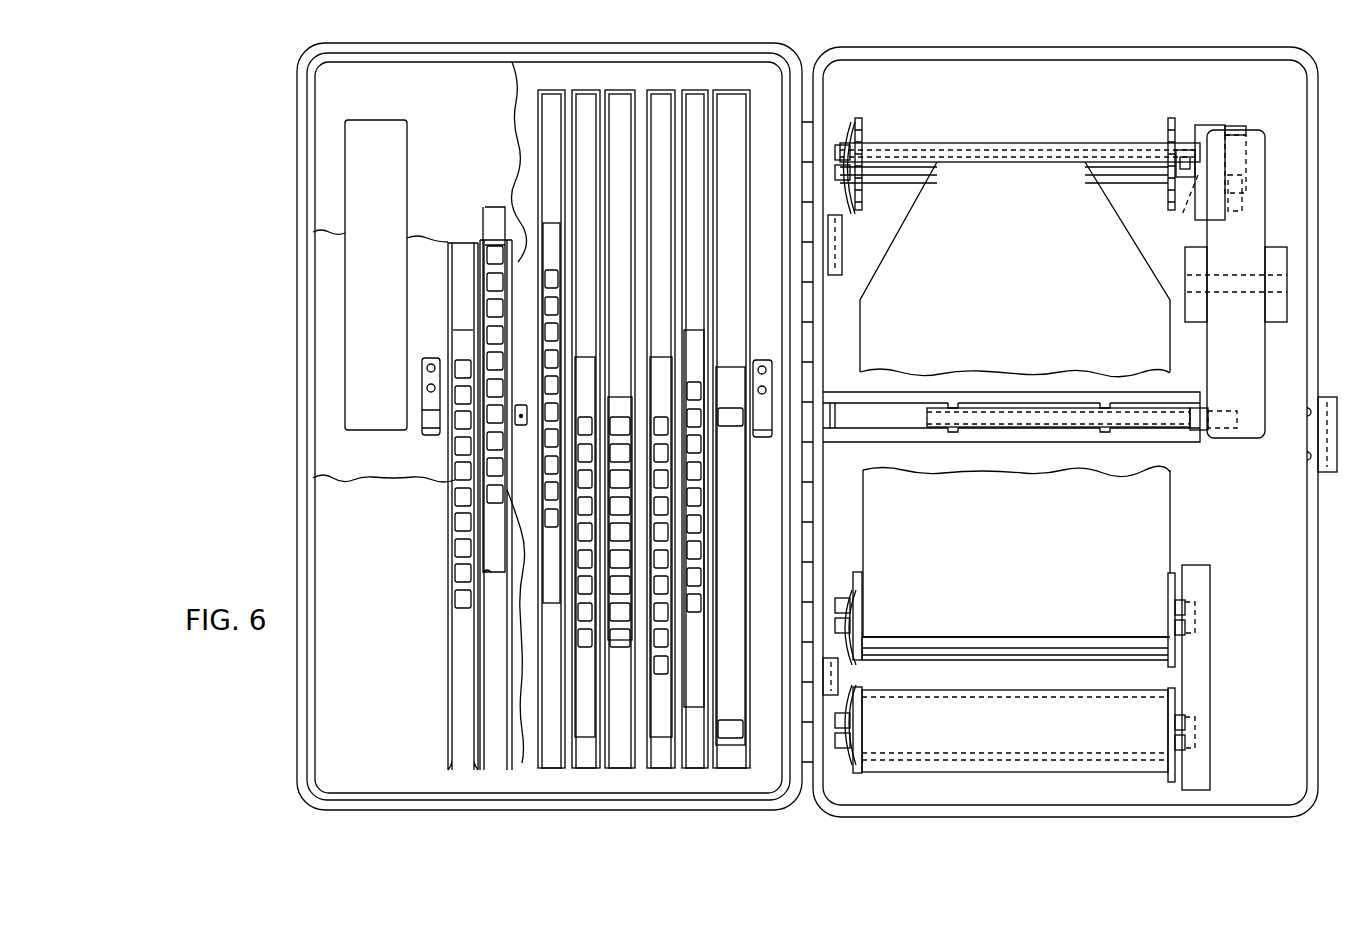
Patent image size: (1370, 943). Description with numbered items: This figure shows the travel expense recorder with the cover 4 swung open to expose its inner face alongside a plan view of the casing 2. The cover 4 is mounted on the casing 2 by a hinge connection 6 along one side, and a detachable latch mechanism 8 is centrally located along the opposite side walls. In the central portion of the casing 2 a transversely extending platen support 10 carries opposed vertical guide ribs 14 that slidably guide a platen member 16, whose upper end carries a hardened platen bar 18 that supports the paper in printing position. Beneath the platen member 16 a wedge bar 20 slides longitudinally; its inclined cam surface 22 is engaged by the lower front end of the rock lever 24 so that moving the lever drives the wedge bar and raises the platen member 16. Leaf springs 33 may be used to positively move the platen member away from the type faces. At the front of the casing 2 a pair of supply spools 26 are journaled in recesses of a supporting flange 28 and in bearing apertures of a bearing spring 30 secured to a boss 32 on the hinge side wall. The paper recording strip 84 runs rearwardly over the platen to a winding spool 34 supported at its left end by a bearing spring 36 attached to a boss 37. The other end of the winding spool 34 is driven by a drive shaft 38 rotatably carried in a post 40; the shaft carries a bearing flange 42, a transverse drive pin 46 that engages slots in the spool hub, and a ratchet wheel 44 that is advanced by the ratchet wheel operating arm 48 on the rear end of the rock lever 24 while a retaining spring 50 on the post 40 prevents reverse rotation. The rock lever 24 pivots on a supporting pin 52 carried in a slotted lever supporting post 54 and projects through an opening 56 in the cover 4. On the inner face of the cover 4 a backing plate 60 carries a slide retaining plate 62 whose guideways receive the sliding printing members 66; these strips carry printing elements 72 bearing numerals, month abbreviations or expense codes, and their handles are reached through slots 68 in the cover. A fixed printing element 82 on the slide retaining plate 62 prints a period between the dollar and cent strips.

The casing 2 is at (1013, 52).
The cover 4 is at (555, 50).
The hinge connection 6 is at (813, 122).
The latch mechanism 8 is at (1328, 397).
The platen support 10 is at (1030, 414).
The guide ribs 14 is at (955, 403).
The platen member 16 is at (838, 432).
The platen bar 18 is at (1035, 427).
The wedge bar 20 is at (927, 415).
The inclined cam surface 22 is at (1202, 432).
The rock lever 24 is at (1265, 185).
The supply spools 26 is at (1005, 655).
The supporting flange 28 is at (1210, 578).
The bearing spring 30 is at (850, 592).
The boss 32 is at (845, 680).
The leaf springs 33 is at (422, 416).
The winding spool 34 is at (940, 143).
The bearing spring 36 is at (851, 212).
The boss 37 is at (838, 276).
The drive shaft 38 is at (1183, 204).
The post 40 is at (1212, 125).
The bearing flange 42 is at (1192, 124).
The ratchet wheel 44 is at (1246, 152).
The drive pin 46 is at (1180, 163).
The ratchet wheel operating arm 48 is at (1246, 130).
The retaining spring 50 is at (1242, 207).
The supporting pin 52 is at (1235, 276).
The lever supporting post 54 is at (1185, 254).
The opening 56 is at (388, 135).
The backing plate 60 is at (374, 739).
The slide retaining plate 62 is at (580, 794).
The printing members 66 is at (495, 207).
The slots 68 is at (462, 517).
The printing elements 72 is at (454, 470).
The printing element 82 is at (521, 405).
The paper recording strip 84 is at (1170, 535).